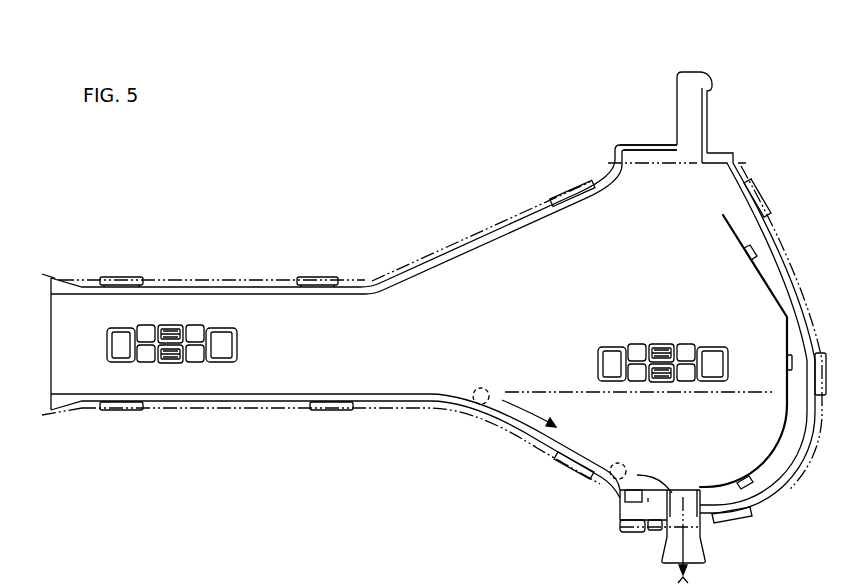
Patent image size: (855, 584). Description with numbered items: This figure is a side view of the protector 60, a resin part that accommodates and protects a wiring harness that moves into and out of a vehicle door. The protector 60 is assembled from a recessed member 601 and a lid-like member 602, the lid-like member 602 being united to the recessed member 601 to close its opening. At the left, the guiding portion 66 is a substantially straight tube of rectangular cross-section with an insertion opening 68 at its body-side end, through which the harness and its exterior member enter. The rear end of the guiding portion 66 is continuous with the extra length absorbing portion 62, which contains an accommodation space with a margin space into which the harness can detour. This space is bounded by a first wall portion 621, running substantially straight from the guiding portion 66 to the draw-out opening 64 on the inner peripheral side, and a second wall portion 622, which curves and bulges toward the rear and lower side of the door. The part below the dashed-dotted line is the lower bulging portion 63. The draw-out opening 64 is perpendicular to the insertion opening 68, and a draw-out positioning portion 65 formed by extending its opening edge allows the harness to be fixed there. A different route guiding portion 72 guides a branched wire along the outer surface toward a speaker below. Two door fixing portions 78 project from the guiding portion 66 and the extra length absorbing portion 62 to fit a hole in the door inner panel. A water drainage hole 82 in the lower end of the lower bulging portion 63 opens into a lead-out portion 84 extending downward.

The protector 60 is at (324, 165).
The extra length absorbing portion 62 is at (477, 239).
The first wall portion 621 is at (500, 238).
The second wall portion 622 is at (755, 460).
The lower bulging portion 63 is at (562, 437).
The draw-out opening 64 is at (637, 152).
The draw-out positioning portion 65 is at (690, 82).
The guiding portion 66 is at (198, 286).
The insertion opening 68 is at (51, 296).
The different route guiding portion 72 is at (753, 255).
The door fixing portion 78 is at (173, 326).
The water drainage hole 82 is at (681, 505).
The lead-out portion 84 is at (705, 547).
The recessed member 601 is at (388, 398).
The lid-like member 602 is at (433, 408).